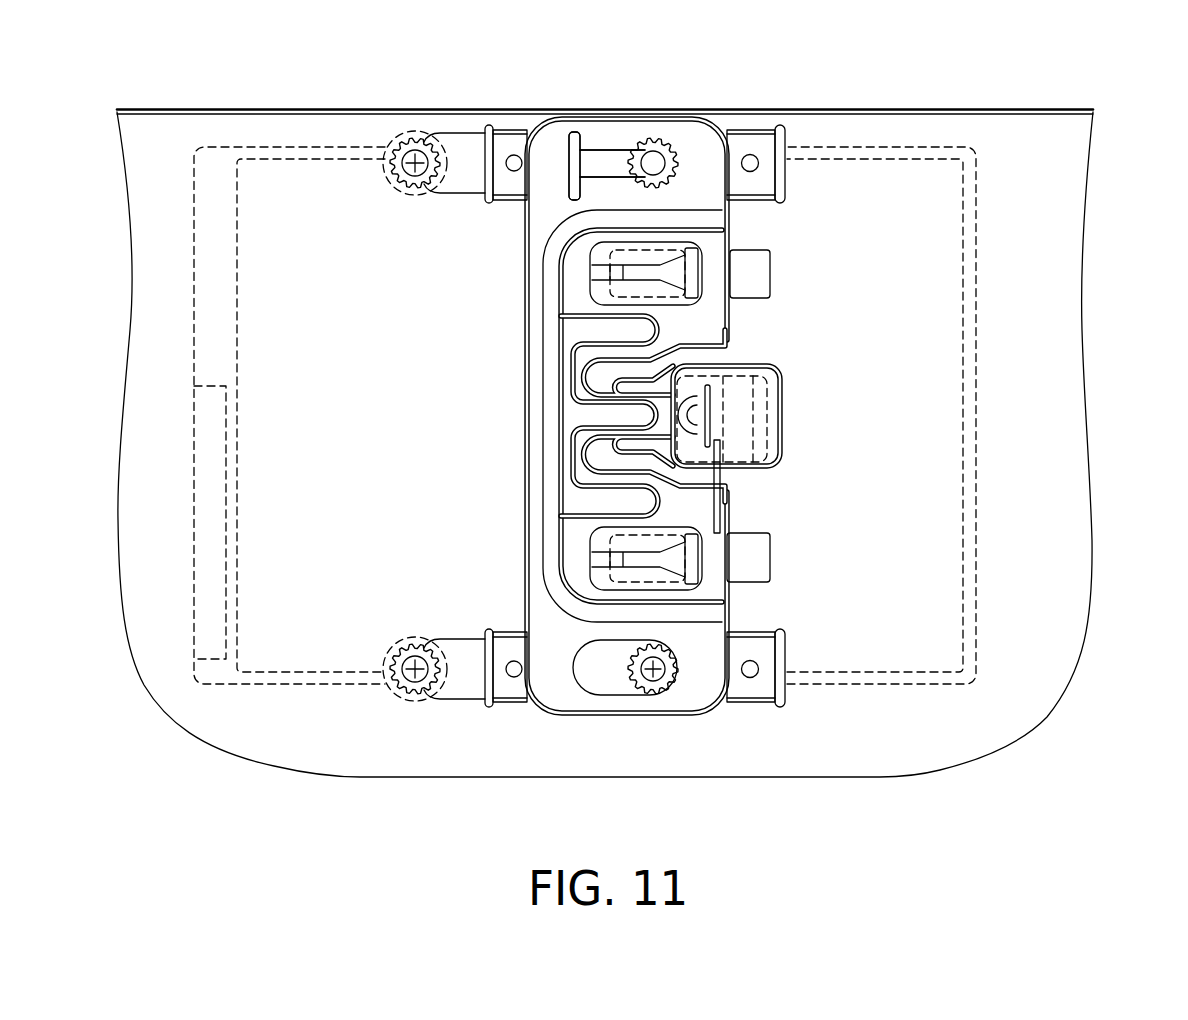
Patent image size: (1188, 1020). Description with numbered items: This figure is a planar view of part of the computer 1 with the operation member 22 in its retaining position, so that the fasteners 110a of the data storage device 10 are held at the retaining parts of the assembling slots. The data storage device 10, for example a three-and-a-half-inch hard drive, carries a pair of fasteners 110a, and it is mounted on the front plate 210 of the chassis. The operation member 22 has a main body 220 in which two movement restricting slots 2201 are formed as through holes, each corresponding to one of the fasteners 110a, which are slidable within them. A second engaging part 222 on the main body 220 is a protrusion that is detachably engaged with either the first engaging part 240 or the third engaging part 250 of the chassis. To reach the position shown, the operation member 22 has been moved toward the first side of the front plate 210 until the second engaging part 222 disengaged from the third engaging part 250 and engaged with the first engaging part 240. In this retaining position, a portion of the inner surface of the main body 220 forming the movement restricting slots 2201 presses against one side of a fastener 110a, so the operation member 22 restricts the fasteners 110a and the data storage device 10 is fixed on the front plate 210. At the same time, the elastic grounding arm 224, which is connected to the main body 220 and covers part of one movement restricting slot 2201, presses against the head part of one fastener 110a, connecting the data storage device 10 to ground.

The computer 1 is at (1185, 74).
The data storage device 10 is at (909, 147).
The front plate 210 is at (1052, 392).
The main body 220 is at (697, 150).
The operation member 22 is at (518, 238).
The elastic grounding arm 224 is at (600, 165).
The movement restricting slot 2201 is at (606, 138).
The fastener 110a is at (652, 140).
The third engaging part 250 is at (742, 380).
The second engaging part 222 is at (700, 415).
The first engaging part 240 is at (703, 462).